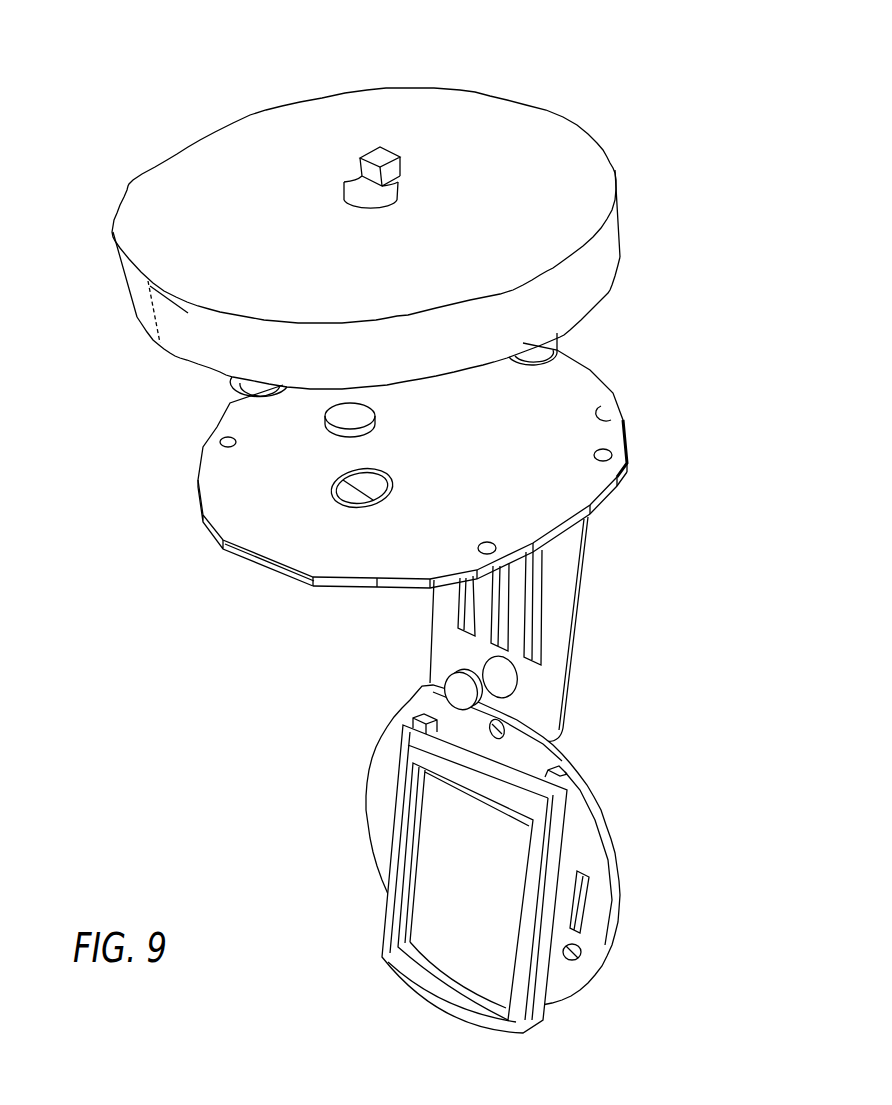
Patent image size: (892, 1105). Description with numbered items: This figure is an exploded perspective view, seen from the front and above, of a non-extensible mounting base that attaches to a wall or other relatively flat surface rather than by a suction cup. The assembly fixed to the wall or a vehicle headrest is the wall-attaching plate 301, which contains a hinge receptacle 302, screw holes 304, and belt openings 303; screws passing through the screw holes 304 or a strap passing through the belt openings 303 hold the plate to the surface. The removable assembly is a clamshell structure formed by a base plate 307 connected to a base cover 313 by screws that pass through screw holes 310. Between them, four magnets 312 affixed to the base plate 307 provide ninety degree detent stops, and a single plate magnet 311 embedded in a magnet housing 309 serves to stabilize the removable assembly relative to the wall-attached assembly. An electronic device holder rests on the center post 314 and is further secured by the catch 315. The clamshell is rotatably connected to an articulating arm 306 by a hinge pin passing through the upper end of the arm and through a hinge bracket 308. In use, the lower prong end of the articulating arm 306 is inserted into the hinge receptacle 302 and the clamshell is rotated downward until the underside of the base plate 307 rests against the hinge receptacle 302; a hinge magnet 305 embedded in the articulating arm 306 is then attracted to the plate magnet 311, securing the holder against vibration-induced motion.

The wall-attaching plate 301 is at (374, 800).
The hinge receptacle 302 is at (534, 1018).
The belt openings 303 is at (589, 890).
The screw holes 304 is at (590, 952).
The hinge magnet 305 is at (442, 682).
The articulating arm 306 is at (367, 592).
The base plate 307 is at (198, 483).
The hinge bracket 308 is at (634, 479).
The magnet housing 309 is at (220, 541).
The screw holes 310 is at (498, 581).
The plate magnet 311 is at (335, 431).
The magnets 312 is at (612, 283).
The base cover 313 is at (537, 327).
The center post 314 is at (397, 190).
The catch 315 is at (392, 146).